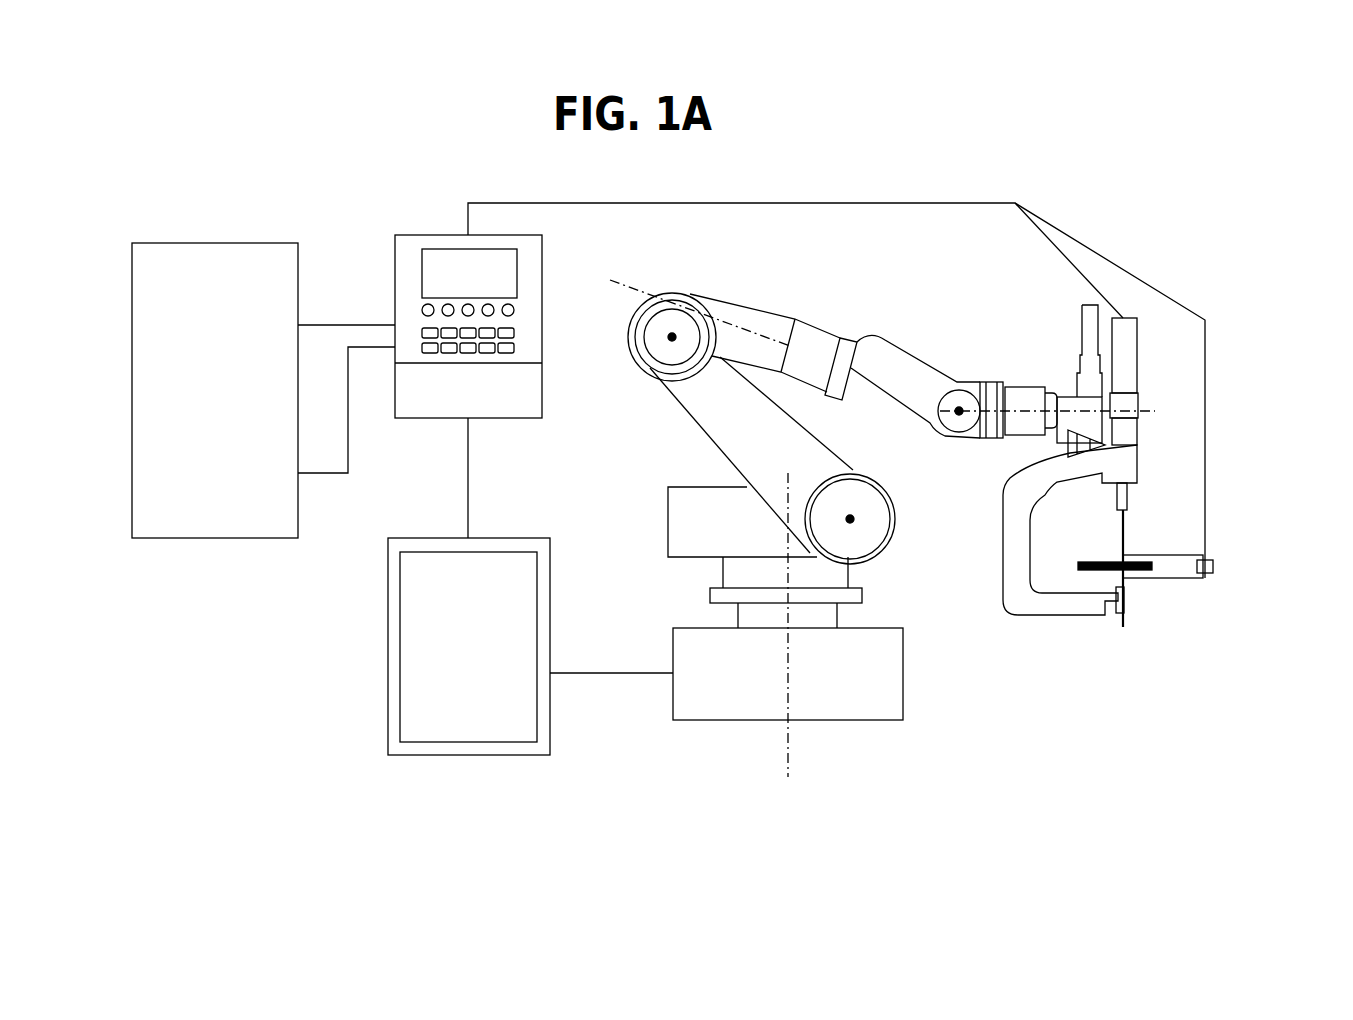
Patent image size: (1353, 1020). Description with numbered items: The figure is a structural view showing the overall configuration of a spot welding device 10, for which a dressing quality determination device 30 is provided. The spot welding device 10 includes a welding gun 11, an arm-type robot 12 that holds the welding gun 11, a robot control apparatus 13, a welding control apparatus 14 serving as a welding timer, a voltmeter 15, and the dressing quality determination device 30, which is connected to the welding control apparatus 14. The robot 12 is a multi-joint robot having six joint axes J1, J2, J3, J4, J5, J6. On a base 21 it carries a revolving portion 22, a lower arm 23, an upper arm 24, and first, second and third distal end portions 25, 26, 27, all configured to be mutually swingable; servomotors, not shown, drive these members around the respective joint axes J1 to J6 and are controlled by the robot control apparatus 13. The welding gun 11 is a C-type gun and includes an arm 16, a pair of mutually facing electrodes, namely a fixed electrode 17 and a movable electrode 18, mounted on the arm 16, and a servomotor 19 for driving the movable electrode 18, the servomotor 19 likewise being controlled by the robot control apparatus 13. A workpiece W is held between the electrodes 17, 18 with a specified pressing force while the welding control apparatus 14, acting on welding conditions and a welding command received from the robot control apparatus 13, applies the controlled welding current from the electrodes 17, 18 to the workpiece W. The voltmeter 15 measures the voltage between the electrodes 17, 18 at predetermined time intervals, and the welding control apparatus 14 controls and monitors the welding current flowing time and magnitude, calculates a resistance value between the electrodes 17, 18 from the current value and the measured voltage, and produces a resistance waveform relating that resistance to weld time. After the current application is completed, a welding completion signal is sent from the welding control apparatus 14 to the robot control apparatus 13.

The spot welding device 10 is at (1136, 220).
The welding gun 11 is at (1100, 585).
The arm-type robot 12 is at (874, 502).
The robot control apparatus 13 is at (420, 537).
The welding control apparatus 14 is at (420, 235).
The voltmeter 15 is at (1213, 567).
The arm 16 is at (1017, 580).
The fixed electrode 17 is at (1126, 583).
The movable electrode 18 is at (1128, 523).
The servomotor 19 is at (1138, 350).
The base 21 is at (900, 650).
The revolving portion 22 is at (863, 597).
The lower arm 23 is at (705, 422).
The upper arm 24 is at (822, 330).
The first distal end portion 25 is at (881, 390).
The second distal end portion 26 is at (990, 382).
The third distal end portion 27 is at (1013, 387).
The dressing quality determination device 30 is at (158, 240).
The workpiece W is at (1090, 560).
The joint axis J1 is at (790, 752).
The joint axis J2 is at (858, 519).
The joint axis J3 is at (668, 340).
The joint axis J4 is at (616, 282).
The joint axis J5 is at (950, 432).
The joint axis J6 is at (1064, 412).